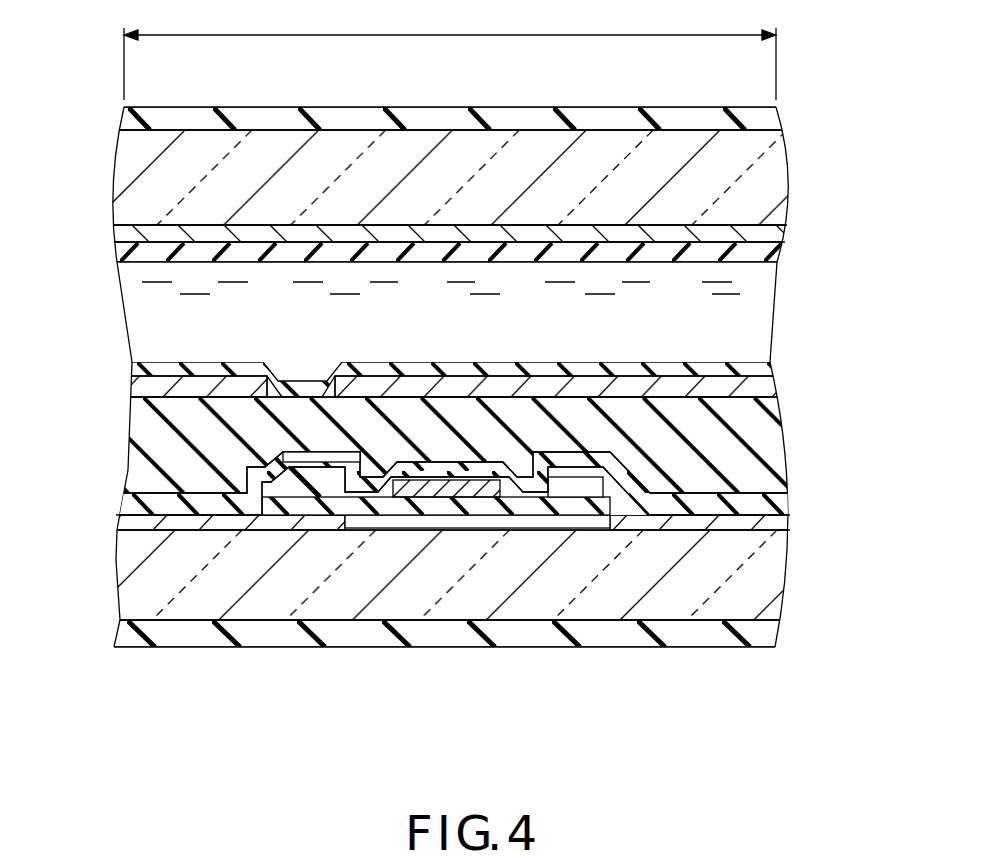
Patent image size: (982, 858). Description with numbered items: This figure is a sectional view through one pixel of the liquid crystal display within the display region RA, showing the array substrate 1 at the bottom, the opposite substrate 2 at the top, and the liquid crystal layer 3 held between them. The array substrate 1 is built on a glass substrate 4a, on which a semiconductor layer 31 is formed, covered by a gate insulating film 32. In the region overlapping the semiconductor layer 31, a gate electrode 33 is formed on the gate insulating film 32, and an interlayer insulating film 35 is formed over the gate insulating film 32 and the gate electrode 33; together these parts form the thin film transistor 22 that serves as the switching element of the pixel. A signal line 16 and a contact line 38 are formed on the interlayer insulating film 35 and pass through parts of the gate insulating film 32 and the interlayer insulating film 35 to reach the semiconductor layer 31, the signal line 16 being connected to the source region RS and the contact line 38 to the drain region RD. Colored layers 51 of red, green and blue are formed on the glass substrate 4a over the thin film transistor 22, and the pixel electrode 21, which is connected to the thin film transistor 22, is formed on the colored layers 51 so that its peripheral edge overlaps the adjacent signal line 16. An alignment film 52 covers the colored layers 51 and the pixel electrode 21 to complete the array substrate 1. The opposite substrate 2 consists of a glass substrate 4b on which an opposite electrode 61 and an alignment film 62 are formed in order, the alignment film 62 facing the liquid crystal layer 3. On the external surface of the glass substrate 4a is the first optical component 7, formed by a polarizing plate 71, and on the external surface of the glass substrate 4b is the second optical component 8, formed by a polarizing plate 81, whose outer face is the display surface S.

The display region RA is at (450, 52).
The display surface S is at (224, 107).
The second optical component 8 is at (664, 107).
The polarizing plate 81 is at (780, 115).
The opposite substrate 2 is at (802, 178).
The glass substrate 4b is at (114, 172).
The opposite electrode 61 is at (786, 238).
The alignment film 62 is at (775, 256).
The liquid crystal layer 3 is at (776, 300).
The array substrate 1 is at (802, 476).
The pixel electrode 21 is at (236, 376).
The signal line 16 is at (300, 452).
The alignment film 52 is at (460, 392).
The contact line 38 is at (555, 462).
The colored layer 51 is at (132, 428).
The interlayer insulating film 35 is at (128, 503).
The gate insulating film 32 is at (117, 522).
The semiconductor layer 31 is at (527, 528).
The gate electrode 33 is at (488, 498).
The thin film transistor 22 is at (298, 556).
The source region RS is at (324, 556).
The drain region RD is at (571, 556).
The glass substrate 4a is at (770, 580).
The first optical component 7 is at (650, 637).
The polarizing plate 71 is at (703, 633).